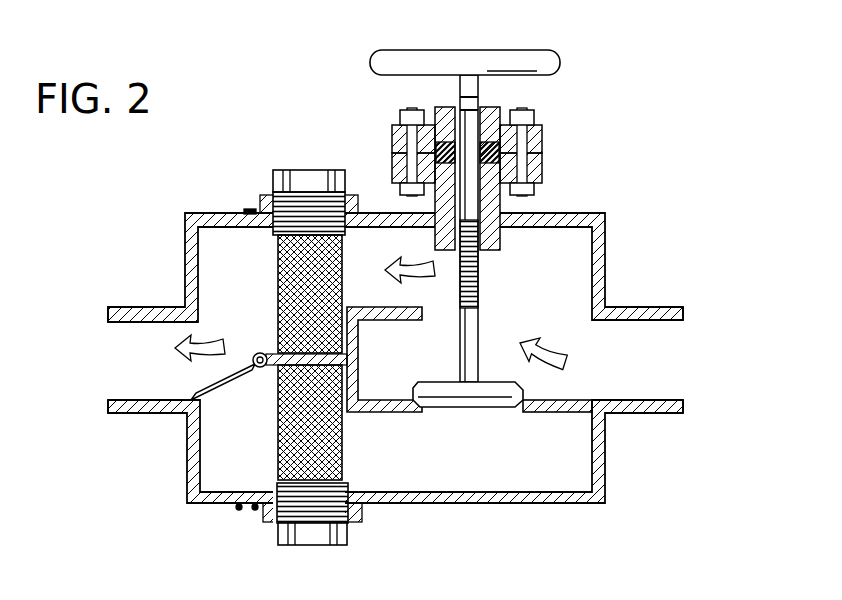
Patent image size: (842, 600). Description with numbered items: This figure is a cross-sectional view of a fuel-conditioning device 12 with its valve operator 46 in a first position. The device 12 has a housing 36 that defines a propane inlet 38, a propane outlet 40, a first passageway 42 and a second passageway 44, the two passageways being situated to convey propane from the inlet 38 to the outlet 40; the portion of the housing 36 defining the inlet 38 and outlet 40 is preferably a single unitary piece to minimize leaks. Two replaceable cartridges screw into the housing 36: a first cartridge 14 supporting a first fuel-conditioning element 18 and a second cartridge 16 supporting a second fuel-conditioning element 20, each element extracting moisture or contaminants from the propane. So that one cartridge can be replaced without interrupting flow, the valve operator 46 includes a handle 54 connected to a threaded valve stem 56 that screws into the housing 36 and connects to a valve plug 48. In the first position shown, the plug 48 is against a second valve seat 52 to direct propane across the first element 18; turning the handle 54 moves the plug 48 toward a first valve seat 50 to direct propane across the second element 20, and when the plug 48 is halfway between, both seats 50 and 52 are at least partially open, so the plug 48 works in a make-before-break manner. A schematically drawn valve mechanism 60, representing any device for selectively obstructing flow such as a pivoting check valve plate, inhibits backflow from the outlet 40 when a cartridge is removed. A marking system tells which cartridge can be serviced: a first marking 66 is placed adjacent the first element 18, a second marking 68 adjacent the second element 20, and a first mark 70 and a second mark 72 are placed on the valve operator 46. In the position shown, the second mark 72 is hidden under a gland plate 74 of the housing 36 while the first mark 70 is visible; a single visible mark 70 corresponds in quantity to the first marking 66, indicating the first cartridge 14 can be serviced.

The fuel-conditioning device 12 is at (712, 166).
The first cartridge 14 is at (310, 170).
The second cartridge 16 is at (350, 536).
The first fuel-conditioning element 18 is at (278, 270).
The second fuel-conditioning element 20 is at (280, 408).
The housing 36 is at (605, 233).
The propane inlet 38 is at (663, 398).
The propane outlet 40 is at (133, 400).
The first passageway 42 is at (378, 264).
The second passageway 44 is at (406, 464).
The valve operator 46 is at (498, 303).
The valve plug 48 is at (456, 408).
The first valve seat 50 is at (422, 322).
The second valve seat 52 is at (507, 400).
The handle 54 is at (546, 50).
The threaded valve stem 56 is at (478, 335).
The valve mechanism 60 is at (235, 356).
The first marking 66 is at (250, 208).
The second marking 68 is at (255, 510).
The first mark 70 is at (472, 80).
The second mark 72 is at (446, 118).
The gland plate 74 is at (545, 136).